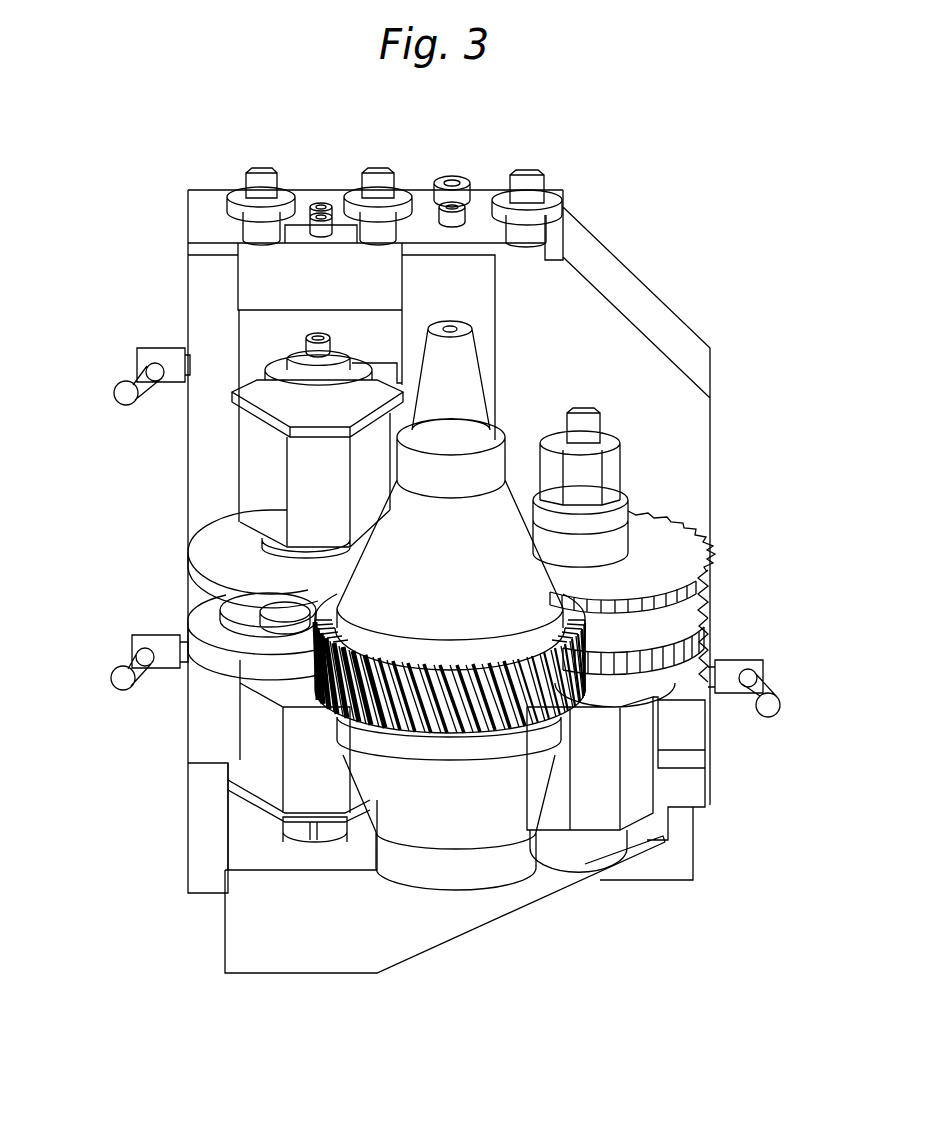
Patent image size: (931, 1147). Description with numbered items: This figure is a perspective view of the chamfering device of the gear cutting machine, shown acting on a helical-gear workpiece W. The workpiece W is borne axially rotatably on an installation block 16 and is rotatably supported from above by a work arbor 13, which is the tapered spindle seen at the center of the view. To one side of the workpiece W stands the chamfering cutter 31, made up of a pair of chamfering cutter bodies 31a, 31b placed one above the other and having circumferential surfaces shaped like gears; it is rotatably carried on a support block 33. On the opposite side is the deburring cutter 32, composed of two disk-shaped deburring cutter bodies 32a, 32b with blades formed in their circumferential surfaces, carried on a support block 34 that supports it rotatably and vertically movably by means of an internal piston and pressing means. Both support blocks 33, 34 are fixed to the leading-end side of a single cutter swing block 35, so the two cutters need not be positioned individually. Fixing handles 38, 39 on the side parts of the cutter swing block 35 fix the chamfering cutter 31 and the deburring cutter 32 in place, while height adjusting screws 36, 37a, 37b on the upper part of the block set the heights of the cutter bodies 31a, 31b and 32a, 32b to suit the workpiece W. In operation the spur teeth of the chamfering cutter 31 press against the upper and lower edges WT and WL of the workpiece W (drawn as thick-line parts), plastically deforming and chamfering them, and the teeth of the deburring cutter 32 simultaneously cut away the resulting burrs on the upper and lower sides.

The work arbor 13 is at (500, 500).
The installation block 16 is at (443, 830).
The chamfering cutter 31 is at (689, 596).
The chamfering cutter body 31a is at (707, 572).
The chamfering cutter body 31b is at (707, 632).
The deburring cutter 32 is at (238, 506).
The deburring cutter body 32a is at (192, 558).
The deburring cutter body 32b is at (218, 632).
The support block 33 is at (635, 750).
The support block 34 is at (260, 773).
The cutter swing block 35 is at (202, 273).
The height adjusting screw 36 is at (527, 180).
The height adjusting screw 37a is at (250, 178).
The height adjusting screw 37b is at (377, 178).
The fixing handle 38 is at (762, 688).
The fixing handle 39 is at (140, 373).
The workpiece W is at (500, 680).
The lower edge WL is at (473, 683).
The upper edge WT is at (570, 700).